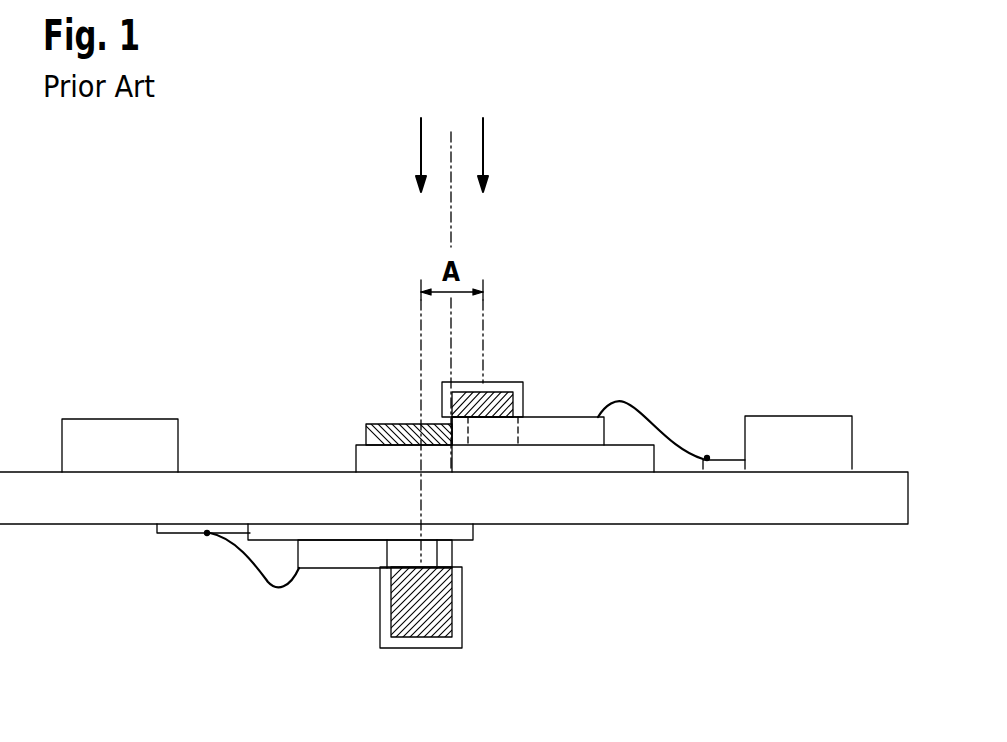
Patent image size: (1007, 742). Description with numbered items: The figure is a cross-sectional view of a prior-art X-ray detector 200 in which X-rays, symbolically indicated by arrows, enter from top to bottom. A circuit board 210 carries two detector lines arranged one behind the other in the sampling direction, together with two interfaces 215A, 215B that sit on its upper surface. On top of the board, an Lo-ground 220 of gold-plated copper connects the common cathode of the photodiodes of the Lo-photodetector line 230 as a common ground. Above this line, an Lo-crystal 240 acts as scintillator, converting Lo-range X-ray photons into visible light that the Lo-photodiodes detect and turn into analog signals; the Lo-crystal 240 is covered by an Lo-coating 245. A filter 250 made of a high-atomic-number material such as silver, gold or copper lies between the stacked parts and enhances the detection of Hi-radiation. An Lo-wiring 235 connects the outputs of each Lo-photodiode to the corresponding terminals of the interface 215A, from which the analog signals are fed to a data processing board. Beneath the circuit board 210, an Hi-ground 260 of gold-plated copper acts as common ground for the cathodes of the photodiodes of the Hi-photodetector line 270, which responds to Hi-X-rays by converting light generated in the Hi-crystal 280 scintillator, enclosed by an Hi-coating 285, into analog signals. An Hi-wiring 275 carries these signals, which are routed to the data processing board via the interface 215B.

The detector 200 is at (766, 193).
The circuit board 210 is at (792, 514).
The interface 215A is at (798, 426).
The interface 215B is at (117, 428).
The Lo-ground 220 is at (356, 455).
The Lo-photodetector line 230 is at (568, 420).
The Lo-wiring 235 is at (637, 400).
The Lo-crystal 240 is at (495, 401).
The Lo-coating 245 is at (447, 397).
The filter 250 is at (365, 428).
The Hi-ground 260 is at (473, 530).
The Hi-photodetector line 270 is at (437, 558).
The Hi-wiring 275 is at (262, 584).
The Hi-crystal 280 is at (398, 617).
The Hi-coating 285 is at (455, 616).